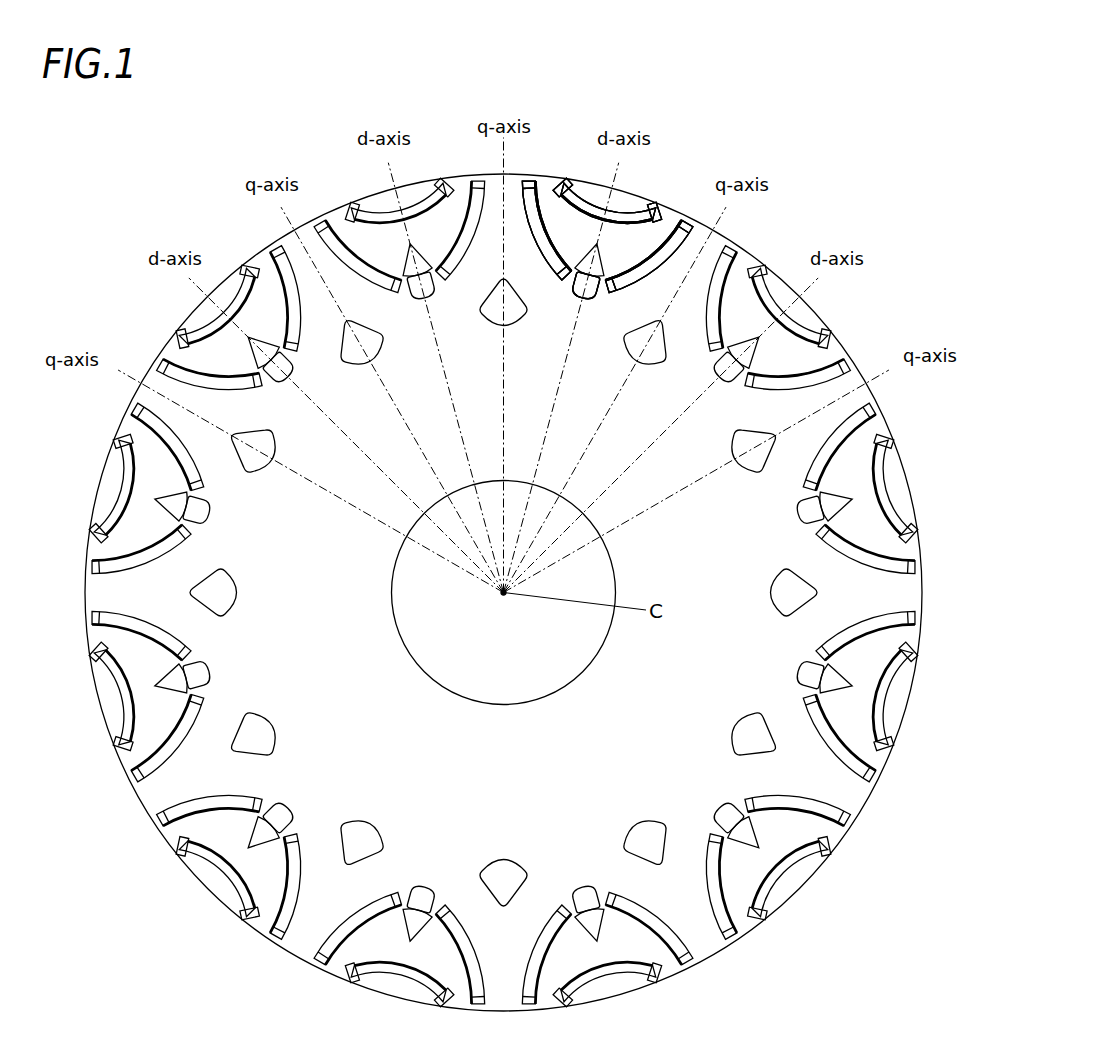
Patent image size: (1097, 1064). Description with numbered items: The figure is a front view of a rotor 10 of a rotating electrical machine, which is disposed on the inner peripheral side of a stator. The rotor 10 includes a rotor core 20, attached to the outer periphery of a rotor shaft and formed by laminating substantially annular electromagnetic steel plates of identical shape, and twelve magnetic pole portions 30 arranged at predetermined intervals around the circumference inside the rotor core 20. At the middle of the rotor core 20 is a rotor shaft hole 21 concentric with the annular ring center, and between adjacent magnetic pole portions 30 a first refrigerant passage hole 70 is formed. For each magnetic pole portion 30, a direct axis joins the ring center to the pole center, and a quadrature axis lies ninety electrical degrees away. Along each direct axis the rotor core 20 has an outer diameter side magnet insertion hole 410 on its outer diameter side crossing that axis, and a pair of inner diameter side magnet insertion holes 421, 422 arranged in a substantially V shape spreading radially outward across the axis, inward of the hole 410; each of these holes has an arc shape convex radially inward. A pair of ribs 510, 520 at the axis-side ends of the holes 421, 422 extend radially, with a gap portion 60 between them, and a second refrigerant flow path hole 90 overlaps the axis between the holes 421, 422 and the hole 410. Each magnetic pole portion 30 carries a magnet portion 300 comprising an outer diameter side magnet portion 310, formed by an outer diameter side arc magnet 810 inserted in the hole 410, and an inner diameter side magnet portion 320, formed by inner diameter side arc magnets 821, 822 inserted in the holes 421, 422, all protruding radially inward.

The rotor 10 is at (891, 229).
The rotor core 20 is at (793, 902).
The rotor shaft hole 21 is at (590, 652).
The magnetic pole portion 30 is at (541, 182).
The gap portion 60 is at (583, 305).
The first refrigerant passage hole 70 is at (496, 314).
The second refrigerant flow path hole 90 is at (416, 292).
The magnet portion 300 is at (210, 197).
The outer diameter side magnet portion 310 is at (377, 232).
The inner diameter side magnet portion 320 is at (442, 243).
The outer diameter side magnet insertion hole 410 is at (626, 202).
The inner diameter side magnet insertion hole 421 is at (522, 178).
The inner diameter side magnet insertion hole 422 is at (681, 214).
The rib 510 is at (574, 285).
The rib 520 is at (611, 294).
The outer diameter side arc magnet 810 is at (567, 188).
The inner diameter side arc magnet 821 is at (540, 236).
The inner diameter side arc magnet 822 is at (645, 275).